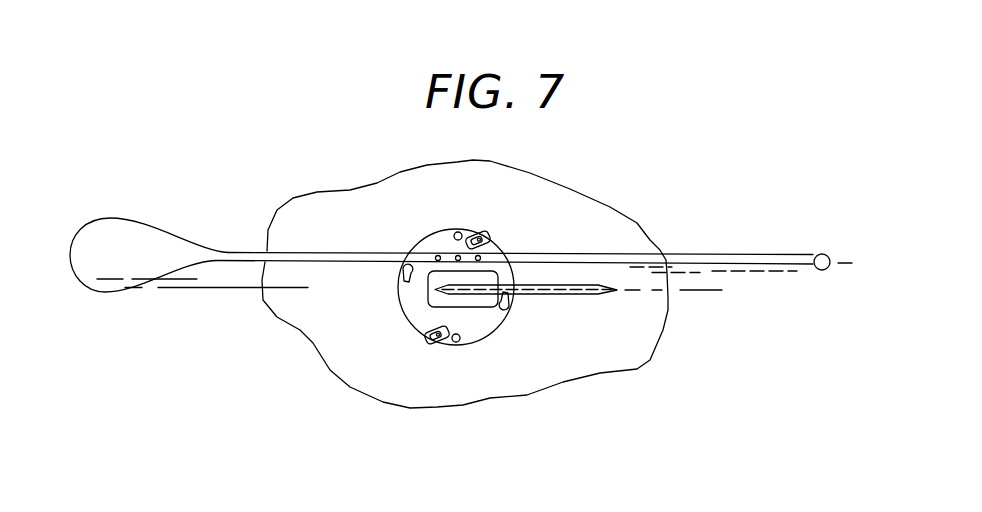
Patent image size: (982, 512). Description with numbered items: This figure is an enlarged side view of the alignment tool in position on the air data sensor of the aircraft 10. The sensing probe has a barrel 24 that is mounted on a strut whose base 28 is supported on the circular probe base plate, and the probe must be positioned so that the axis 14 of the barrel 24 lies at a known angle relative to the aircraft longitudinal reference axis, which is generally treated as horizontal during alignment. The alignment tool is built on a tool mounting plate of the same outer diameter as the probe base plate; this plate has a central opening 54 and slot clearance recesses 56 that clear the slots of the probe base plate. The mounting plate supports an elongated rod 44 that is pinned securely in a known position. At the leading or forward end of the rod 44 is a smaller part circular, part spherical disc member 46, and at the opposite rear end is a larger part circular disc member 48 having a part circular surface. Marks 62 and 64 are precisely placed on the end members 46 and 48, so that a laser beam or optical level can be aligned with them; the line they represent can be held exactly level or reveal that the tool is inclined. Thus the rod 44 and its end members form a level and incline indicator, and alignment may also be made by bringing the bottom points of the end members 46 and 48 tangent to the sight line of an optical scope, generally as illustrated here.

The aircraft 10 is at (430, 187).
The axis of the probe barrel 14 is at (519, 287).
The barrel 24 is at (530, 293).
The base 28 is at (433, 298).
The rod 44 is at (339, 252).
The part circular disc member 46 is at (816, 253).
The part circular disc member 48 is at (92, 230).
The central opening 54 is at (465, 302).
The slot clearance recesses 56 is at (472, 232).
The mark 62 is at (822, 264).
The mark 64 is at (107, 277).